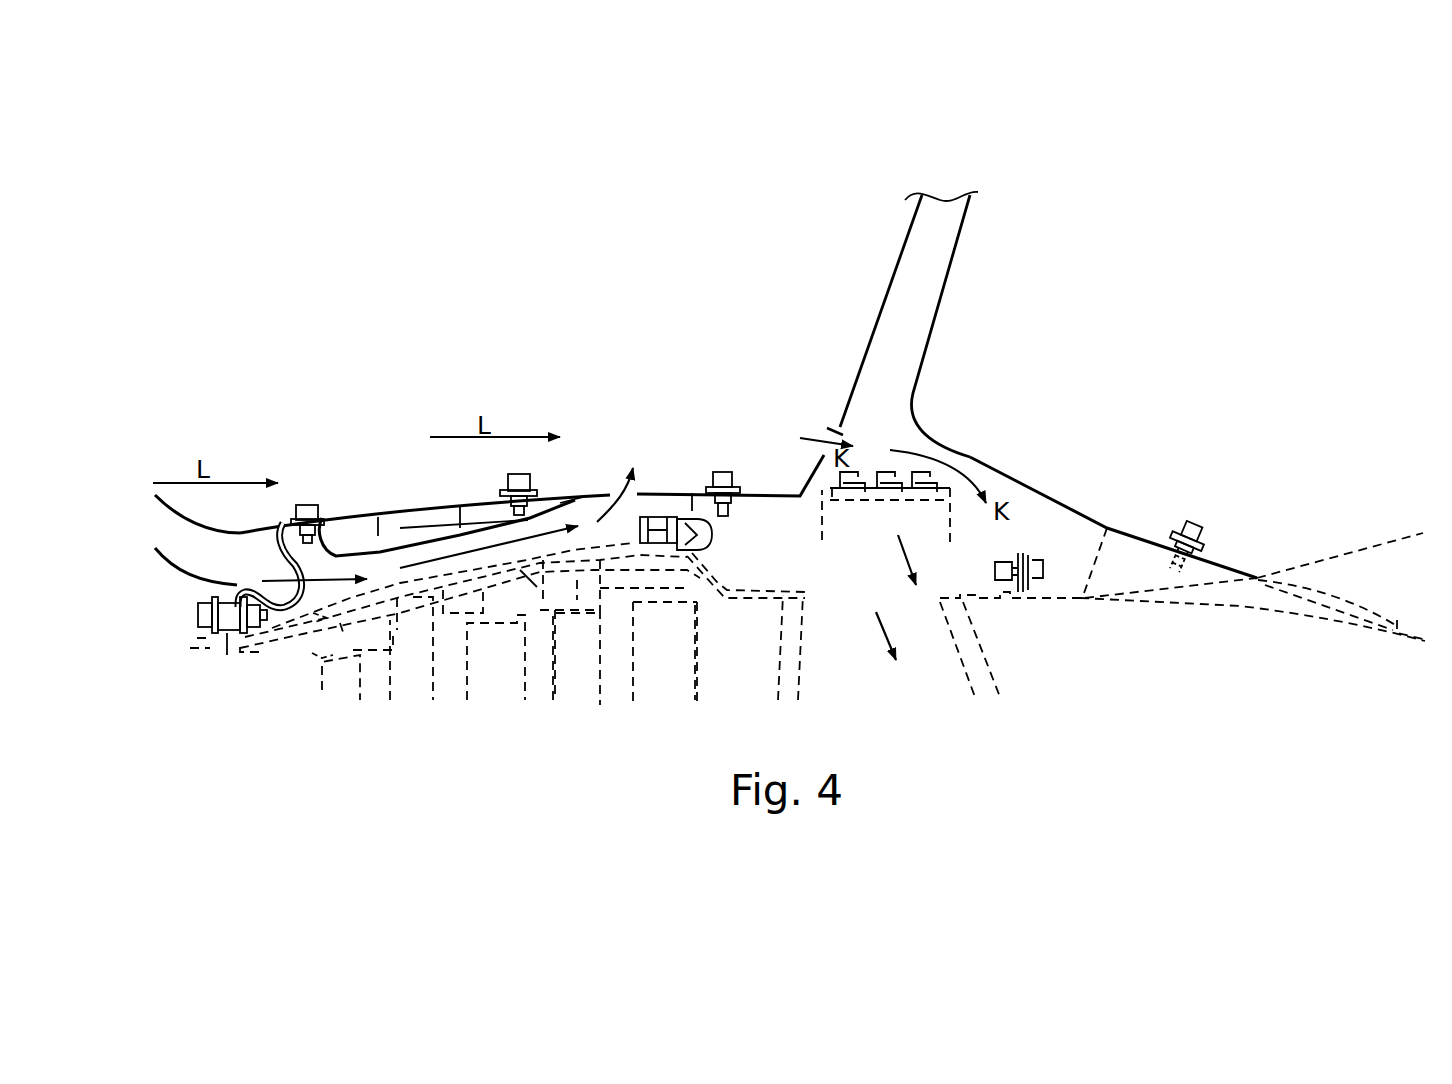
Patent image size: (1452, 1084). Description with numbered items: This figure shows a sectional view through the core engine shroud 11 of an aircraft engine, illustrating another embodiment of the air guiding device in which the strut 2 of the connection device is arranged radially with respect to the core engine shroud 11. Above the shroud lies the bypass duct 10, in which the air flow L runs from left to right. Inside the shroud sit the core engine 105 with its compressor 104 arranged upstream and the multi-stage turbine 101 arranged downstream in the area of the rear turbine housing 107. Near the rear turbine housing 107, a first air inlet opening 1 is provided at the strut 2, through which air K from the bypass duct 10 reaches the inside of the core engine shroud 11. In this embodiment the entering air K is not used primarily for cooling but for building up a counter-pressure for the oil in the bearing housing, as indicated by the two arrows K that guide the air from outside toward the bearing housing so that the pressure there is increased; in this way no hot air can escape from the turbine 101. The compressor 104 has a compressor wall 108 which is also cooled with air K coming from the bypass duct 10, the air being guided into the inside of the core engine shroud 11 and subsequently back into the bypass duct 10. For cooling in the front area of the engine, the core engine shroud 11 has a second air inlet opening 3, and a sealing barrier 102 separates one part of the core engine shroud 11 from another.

The first air inlet opening 1 is at (828, 430).
The strut 2 is at (927, 272).
The second air inlet opening 3 is at (320, 530).
The bypass duct 10 is at (663, 373).
The core engine shroud 11 is at (442, 502).
The turbine 101 is at (928, 728).
The sealing barrier 102 is at (688, 500).
The compressor 104 is at (467, 728).
The core engine 105 is at (1196, 511).
The rear turbine housing 107 is at (972, 455).
The compressor wall 108 is at (349, 602).